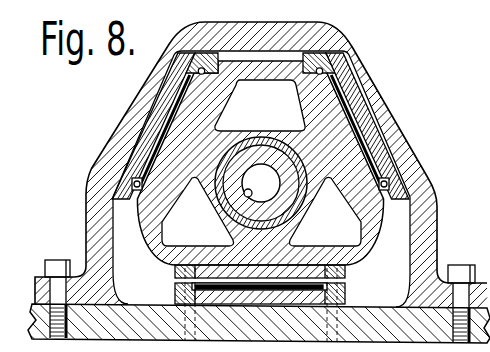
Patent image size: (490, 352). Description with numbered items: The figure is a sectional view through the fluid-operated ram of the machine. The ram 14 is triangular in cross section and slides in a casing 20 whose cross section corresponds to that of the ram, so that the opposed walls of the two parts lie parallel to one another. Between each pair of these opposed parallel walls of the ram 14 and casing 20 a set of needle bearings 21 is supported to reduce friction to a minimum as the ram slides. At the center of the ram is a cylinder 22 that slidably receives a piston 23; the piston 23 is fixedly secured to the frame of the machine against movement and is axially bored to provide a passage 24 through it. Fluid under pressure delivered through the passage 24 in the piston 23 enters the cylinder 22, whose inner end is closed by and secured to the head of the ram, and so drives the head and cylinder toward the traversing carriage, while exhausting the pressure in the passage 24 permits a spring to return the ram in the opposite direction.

The ram 14 is at (368, 251).
The casing 20 is at (398, 121).
The needle bearings 21 is at (162, 128).
The cylinder 22 is at (259, 137).
The piston 23 is at (267, 142).
The passage 24 is at (222, 219).